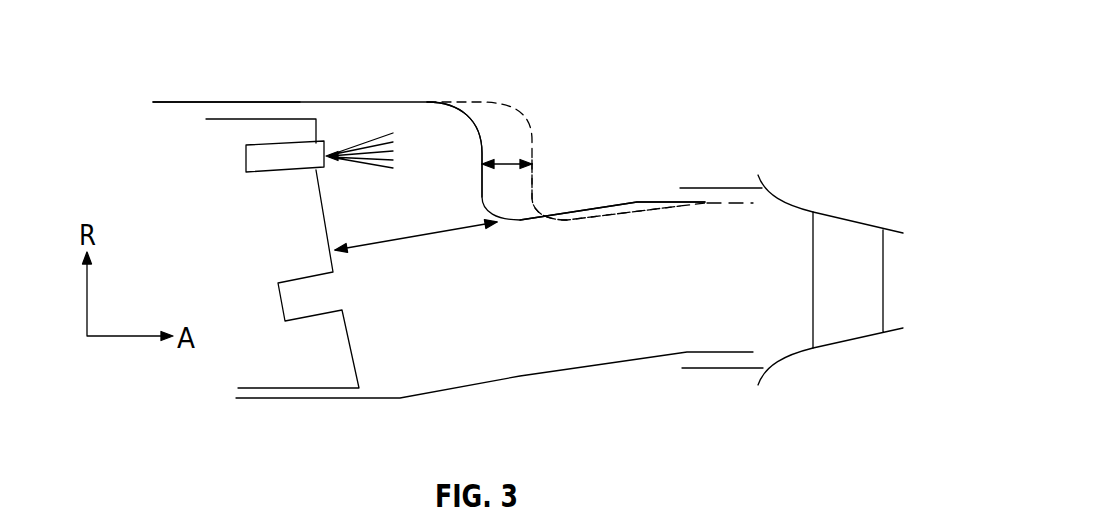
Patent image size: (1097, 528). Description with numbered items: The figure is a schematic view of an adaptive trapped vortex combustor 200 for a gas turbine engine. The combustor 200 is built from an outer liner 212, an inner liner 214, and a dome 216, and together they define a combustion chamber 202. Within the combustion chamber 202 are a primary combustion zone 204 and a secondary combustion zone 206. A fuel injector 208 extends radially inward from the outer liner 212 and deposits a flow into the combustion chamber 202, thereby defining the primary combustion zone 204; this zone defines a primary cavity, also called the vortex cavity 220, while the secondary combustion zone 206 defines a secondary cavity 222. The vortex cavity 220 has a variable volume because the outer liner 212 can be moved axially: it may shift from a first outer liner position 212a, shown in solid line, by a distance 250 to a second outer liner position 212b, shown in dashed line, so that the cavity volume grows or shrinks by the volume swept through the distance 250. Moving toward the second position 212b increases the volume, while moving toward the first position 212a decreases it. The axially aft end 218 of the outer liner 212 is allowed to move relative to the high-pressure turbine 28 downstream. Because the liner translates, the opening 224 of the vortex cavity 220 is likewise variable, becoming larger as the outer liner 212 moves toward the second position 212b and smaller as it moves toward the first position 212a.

The adaptive trapped vortex combustor 200 is at (142, 60).
The combustion chamber 202 is at (596, 128).
The primary combustion zone 204 is at (420, 127).
The secondary combustion zone 206 is at (411, 372).
The fuel injector 208 is at (275, 172).
The outer liner 212 is at (290, 102).
The first outer liner position 212a is at (215, 102).
The second outer liner position 212b is at (535, 190).
The inner liner 214 is at (568, 372).
The dome 216 is at (353, 373).
The axially aft end 218 is at (667, 202).
The vortex cavity 220 is at (430, 207).
The secondary cavity 222 is at (488, 357).
The opening 224 is at (417, 237).
The distance 250 is at (513, 158).
The high-pressure turbine 28 is at (797, 186).